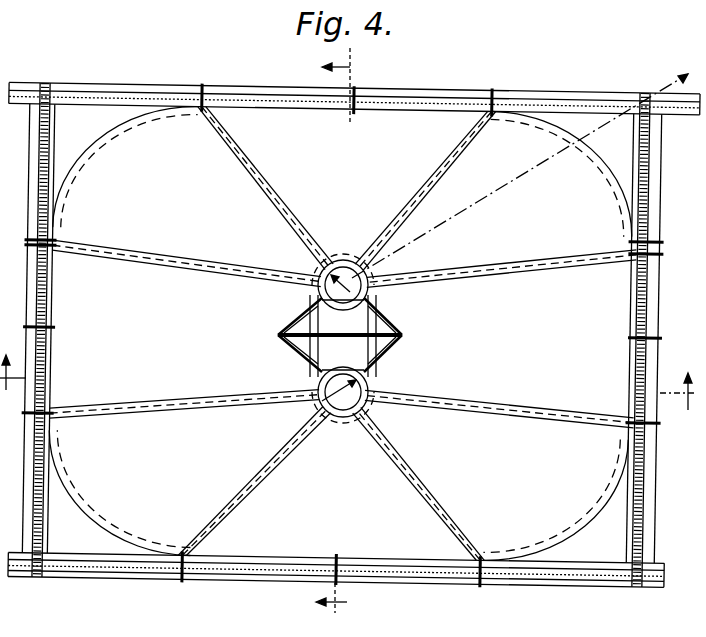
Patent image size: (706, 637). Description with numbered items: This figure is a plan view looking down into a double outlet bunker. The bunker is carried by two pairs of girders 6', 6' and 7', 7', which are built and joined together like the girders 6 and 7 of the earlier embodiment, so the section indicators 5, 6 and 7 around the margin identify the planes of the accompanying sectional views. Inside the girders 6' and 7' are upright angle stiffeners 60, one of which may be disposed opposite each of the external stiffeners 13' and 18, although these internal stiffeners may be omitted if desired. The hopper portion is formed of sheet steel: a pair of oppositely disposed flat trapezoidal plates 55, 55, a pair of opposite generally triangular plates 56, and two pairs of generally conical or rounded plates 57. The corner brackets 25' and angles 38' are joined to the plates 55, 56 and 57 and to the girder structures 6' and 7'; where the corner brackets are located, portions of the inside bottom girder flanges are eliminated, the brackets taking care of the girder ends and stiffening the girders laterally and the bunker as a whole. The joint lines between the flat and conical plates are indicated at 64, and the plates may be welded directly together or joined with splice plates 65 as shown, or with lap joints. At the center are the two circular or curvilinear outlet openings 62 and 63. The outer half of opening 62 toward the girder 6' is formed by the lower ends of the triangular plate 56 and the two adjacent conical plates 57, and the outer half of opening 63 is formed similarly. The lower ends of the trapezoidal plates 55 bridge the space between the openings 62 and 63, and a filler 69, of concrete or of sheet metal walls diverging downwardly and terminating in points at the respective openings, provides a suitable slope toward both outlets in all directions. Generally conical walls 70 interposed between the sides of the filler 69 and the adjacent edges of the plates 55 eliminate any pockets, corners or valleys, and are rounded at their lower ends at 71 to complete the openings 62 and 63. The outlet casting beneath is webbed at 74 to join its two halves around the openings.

The section line 5- 5 is at (514, 229).
The girder 6 is at (353, 382).
The girder 7 is at (348, 342).
The girder 6' is at (350, 333).
The girder 7' is at (347, 335).
The stiffener 13' is at (354, 81).
The stiffener 18 is at (27, 238).
The corner bracket 25' is at (340, 333).
The angle 38' is at (359, 338).
The flat trapezoidal plate 55 is at (343, 334).
The triangular plate 56 is at (334, 326).
The conical plate 57 is at (347, 330).
The upright angle stiffener 60 is at (490, 117).
The outlet opening 62 is at (326, 268).
The outlet opening 63 is at (312, 379).
The joint line 64 is at (450, 153).
The splice plate 65 is at (424, 178).
The filler 69 is at (375, 328).
The conical wall 70 is at (396, 292).
The rounded lower end 71 is at (370, 268).
The web 74 is at (372, 305).